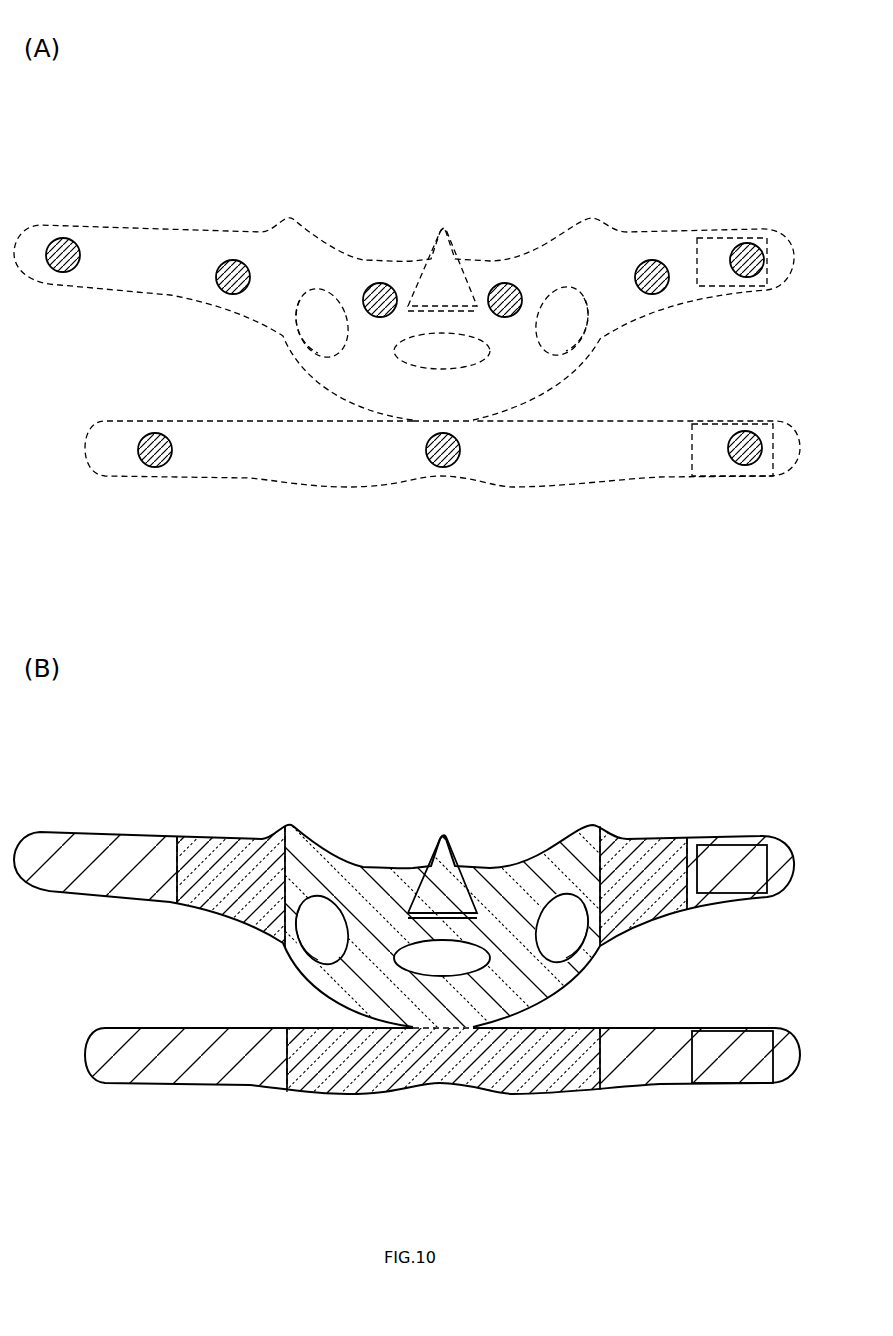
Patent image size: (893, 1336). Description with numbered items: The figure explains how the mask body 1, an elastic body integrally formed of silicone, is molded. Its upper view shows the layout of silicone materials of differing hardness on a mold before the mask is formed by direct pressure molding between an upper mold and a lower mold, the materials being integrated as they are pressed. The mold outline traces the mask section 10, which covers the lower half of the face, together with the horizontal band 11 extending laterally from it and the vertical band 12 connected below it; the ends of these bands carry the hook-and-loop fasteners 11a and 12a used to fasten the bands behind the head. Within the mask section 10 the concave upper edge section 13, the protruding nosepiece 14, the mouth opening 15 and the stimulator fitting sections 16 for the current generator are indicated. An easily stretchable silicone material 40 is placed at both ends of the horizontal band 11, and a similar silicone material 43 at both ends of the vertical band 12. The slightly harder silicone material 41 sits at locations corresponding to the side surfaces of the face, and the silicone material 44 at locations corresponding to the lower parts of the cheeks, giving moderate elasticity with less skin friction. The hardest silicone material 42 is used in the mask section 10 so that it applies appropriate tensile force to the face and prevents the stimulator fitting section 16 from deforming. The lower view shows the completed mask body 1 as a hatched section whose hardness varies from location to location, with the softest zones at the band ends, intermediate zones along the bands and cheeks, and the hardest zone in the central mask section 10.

The mask body 1 is at (722, 88).
The mask section 10 is at (522, 262).
The horizontal band 11 is at (165, 232).
The hook-and-loop fastener 11a is at (725, 234).
The vertical band 12 is at (190, 478).
The hook-and-loop fastener 12a is at (742, 418).
The upper edge section 13 is at (390, 260).
The nosepiece 14 is at (474, 262).
The mouth opening 15 is at (493, 353).
The stimulator fitting section 16 is at (297, 336).
The silicone material 40 is at (62, 236).
The silicone material 41 is at (230, 259).
The silicone material 42 is at (375, 283).
The silicone material 43 is at (152, 467).
The silicone material 44 is at (444, 468).